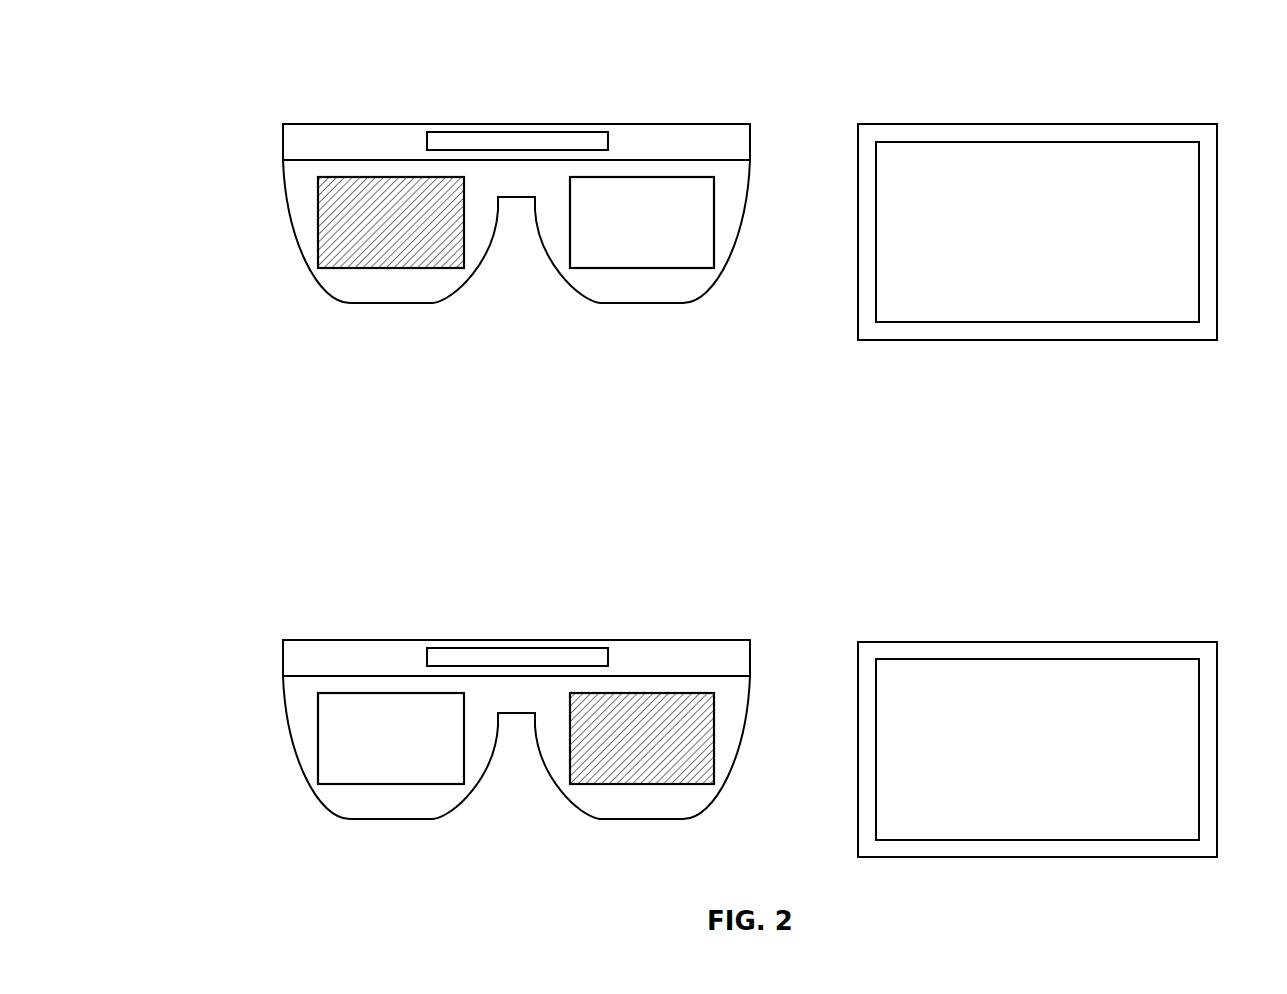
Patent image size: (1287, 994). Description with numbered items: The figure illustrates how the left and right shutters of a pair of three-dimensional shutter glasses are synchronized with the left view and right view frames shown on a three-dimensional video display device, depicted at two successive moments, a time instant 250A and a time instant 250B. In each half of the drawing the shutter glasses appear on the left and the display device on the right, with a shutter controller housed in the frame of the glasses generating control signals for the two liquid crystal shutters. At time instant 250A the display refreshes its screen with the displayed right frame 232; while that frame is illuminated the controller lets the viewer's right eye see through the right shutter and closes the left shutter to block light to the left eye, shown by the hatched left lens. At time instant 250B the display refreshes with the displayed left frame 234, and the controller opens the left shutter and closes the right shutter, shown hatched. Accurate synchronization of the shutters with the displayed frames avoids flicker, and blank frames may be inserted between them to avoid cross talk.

The time instant 250A is at (180, 102).
The time instant 250B is at (177, 563).
The displayed 3D right frame 232 is at (1021, 253).
The displayed 3D left frame 234 is at (1021, 771).